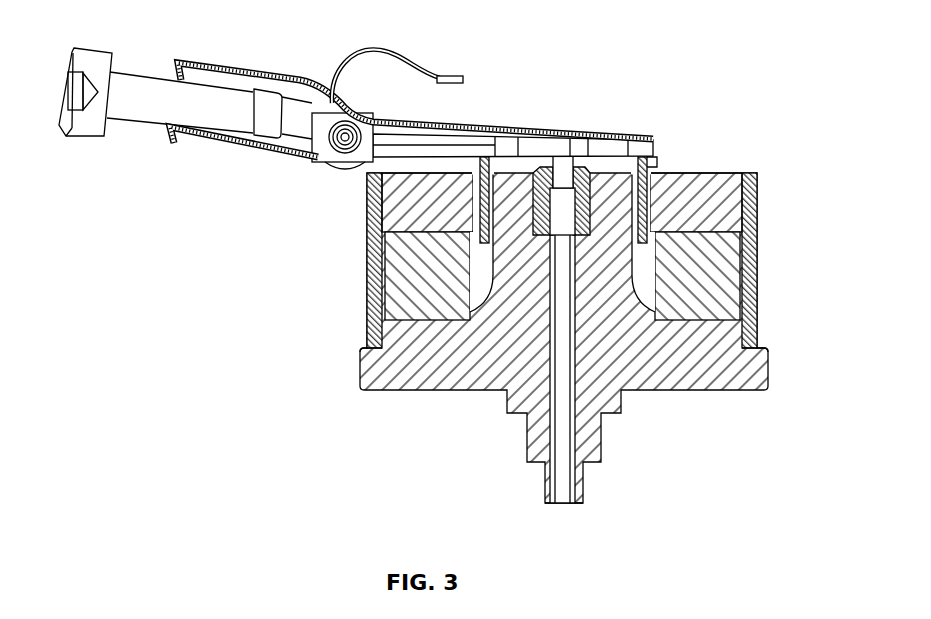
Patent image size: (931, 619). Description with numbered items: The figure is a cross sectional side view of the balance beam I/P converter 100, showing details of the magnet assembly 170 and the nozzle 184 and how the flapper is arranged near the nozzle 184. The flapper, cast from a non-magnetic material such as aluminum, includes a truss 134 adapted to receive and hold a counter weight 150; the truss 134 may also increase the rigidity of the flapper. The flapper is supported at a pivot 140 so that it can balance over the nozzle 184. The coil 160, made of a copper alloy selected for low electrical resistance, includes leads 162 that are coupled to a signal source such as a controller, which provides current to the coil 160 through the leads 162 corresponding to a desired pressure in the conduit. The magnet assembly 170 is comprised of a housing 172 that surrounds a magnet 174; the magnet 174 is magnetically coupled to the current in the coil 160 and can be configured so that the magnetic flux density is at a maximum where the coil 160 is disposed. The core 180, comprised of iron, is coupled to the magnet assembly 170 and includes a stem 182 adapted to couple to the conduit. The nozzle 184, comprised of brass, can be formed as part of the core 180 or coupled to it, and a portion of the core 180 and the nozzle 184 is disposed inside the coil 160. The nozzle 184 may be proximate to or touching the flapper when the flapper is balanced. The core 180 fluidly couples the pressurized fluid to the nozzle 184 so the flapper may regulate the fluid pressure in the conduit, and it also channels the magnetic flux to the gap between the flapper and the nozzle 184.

The balance beam I/P converter 100 is at (751, 40).
The truss 134 is at (235, 68).
The pivot pin 140 is at (344, 171).
The counter weight 150 is at (90, 52).
The coil 160 is at (646, 167).
The leads 162 is at (448, 75).
The magnet assembly 170 is at (766, 246).
The housing 172 is at (366, 256).
The magnet 174 is at (729, 177).
The core 180 is at (360, 370).
The stem 182 is at (578, 505).
The nozzle 184 is at (584, 188).